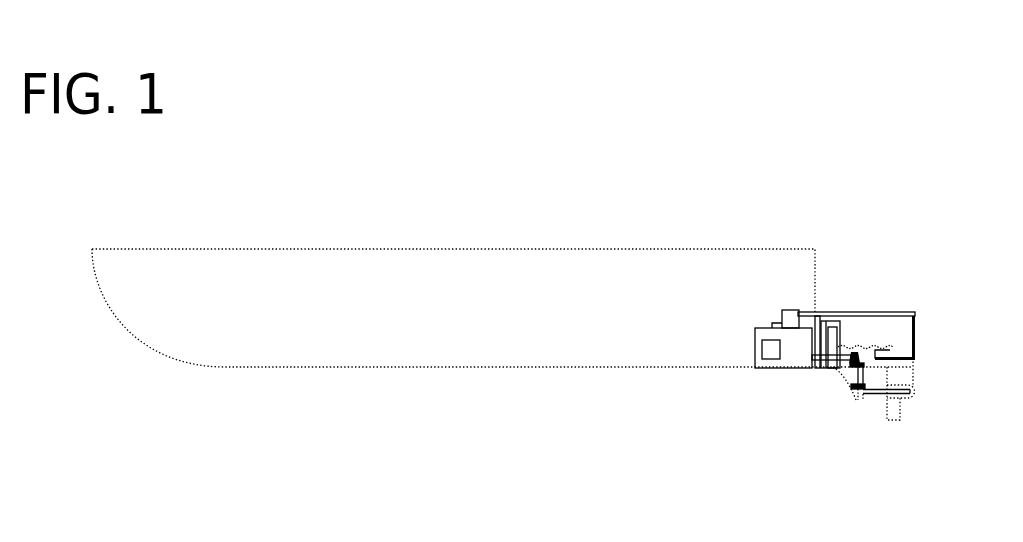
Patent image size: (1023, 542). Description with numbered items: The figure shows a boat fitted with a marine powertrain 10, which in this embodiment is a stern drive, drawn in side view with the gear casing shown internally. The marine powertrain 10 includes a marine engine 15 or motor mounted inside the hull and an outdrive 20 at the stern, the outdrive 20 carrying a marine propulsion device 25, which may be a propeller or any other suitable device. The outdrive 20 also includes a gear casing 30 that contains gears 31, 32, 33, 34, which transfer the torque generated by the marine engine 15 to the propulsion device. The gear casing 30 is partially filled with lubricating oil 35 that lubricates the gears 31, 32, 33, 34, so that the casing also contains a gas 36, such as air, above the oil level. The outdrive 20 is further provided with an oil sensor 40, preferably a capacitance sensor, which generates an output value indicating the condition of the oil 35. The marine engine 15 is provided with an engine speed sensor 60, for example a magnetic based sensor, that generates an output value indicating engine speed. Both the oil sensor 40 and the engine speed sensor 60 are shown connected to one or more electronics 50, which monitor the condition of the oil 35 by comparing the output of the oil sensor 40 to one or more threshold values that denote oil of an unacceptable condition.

The marine powertrain 10 is at (784, 371).
The marine engine 15 is at (752, 350).
The outdrive 20 is at (843, 402).
The marine propulsion device 25 is at (908, 400).
The gear casing 30 is at (901, 372).
The gear 31 is at (854, 352).
The gear 32 is at (862, 362).
The gear 33 is at (856, 400).
The gear 34 is at (864, 392).
The lubricating oil 35 is at (893, 350).
The gas 36 is at (888, 344).
The oil sensor 40 is at (890, 356).
The electronics 50 is at (790, 317).
The engine speed sensor 60 is at (757, 383).